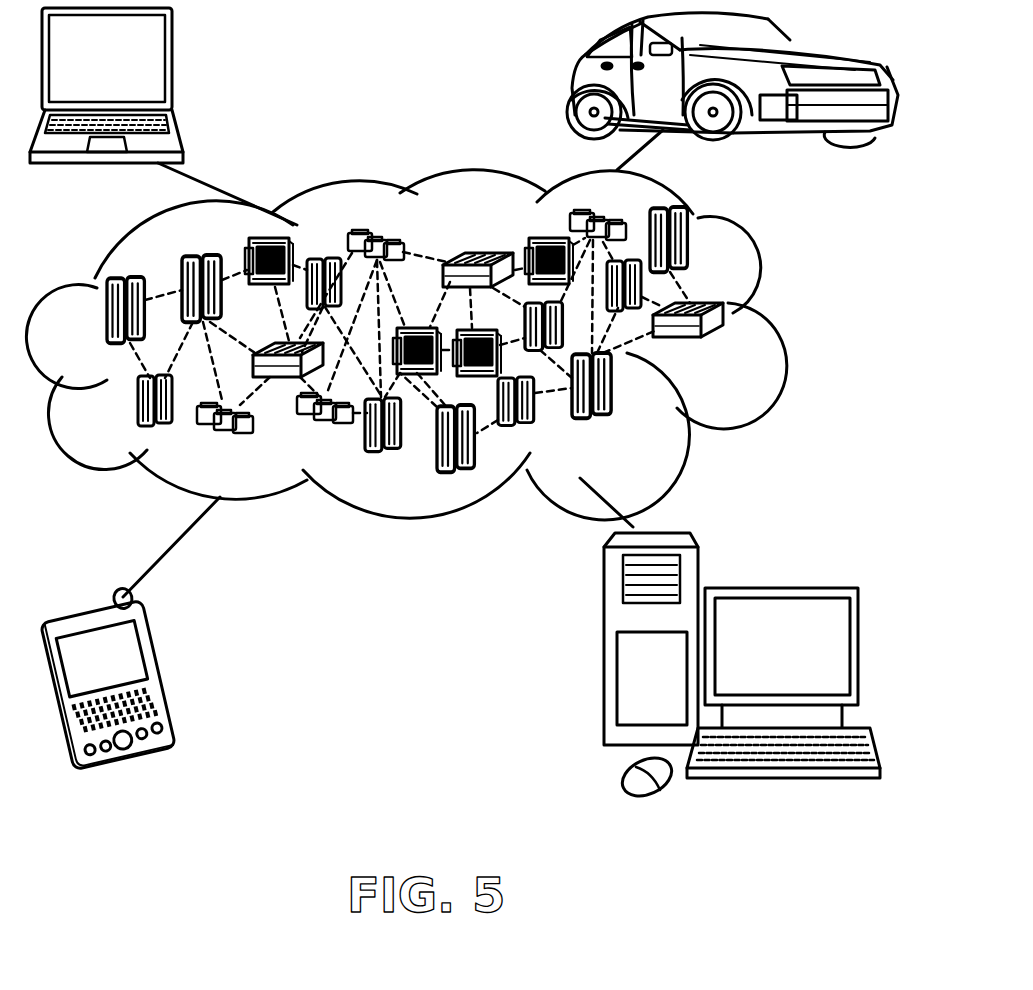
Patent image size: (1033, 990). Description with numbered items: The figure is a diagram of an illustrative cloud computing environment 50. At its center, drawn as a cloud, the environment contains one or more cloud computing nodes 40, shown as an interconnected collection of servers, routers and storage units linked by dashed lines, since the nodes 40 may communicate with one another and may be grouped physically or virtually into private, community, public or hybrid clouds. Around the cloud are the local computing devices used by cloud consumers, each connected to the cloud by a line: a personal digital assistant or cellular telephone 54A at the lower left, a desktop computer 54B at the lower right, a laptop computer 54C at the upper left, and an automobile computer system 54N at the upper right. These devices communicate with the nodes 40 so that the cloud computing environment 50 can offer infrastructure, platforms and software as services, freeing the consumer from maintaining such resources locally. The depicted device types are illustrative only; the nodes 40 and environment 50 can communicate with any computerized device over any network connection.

The cloud computing nodes 40 is at (728, 347).
The cloud computing environment 50 is at (786, 319).
The personal digital assistant (PDA) or cellular telephone 54A is at (160, 673).
The desktop computer 54B is at (781, 587).
The laptop computer 54C is at (172, 66).
The automobile computer system 54N is at (580, 82).